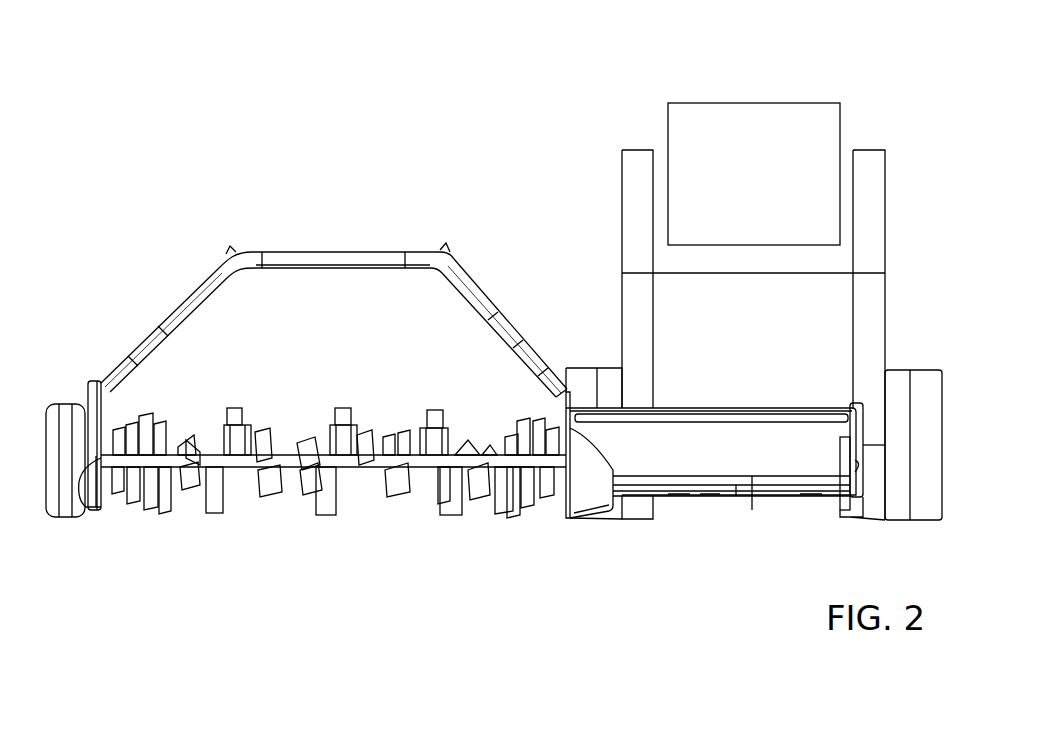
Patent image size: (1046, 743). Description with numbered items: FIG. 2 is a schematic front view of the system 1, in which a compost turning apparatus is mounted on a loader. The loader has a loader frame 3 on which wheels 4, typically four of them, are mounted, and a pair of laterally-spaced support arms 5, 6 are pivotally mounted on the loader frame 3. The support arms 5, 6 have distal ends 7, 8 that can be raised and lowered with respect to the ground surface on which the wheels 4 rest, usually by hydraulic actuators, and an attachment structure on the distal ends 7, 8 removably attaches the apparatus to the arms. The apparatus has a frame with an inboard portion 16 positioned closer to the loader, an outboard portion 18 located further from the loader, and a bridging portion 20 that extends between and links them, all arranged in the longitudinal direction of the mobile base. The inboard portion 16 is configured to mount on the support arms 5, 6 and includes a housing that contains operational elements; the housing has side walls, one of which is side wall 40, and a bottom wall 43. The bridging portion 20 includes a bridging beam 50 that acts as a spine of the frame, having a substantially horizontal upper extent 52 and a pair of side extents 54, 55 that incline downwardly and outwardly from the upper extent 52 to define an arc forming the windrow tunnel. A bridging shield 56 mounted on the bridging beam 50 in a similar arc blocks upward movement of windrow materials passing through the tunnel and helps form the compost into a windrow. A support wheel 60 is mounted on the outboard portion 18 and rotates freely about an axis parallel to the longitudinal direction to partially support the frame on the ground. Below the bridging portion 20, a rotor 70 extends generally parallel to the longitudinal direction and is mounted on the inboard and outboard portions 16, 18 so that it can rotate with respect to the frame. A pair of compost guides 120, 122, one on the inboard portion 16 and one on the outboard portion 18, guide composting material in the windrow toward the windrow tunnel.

The system 1 is at (468, 92).
The bridging portion 20 is at (334, 299).
The upper extent 52 is at (300, 268).
The bridging beam 50 is at (376, 268).
The bridging shield 56 is at (450, 260).
The side extent 55 is at (152, 366).
The side extent 54 is at (536, 362).
The outboard portion 18 is at (86, 440).
The support wheel 60 is at (58, 492).
The compost guide 122 is at (98, 502).
The rotor 70 is at (356, 508).
The compost guide 120 is at (588, 500).
The inboard portion 16 is at (711, 504).
The side wall 40 is at (694, 456).
The bottom wall 43 is at (734, 500).
The distal end 8 is at (638, 390).
The support arm 6 is at (642, 192).
The support arm 5 is at (868, 192).
The loader frame 3 is at (838, 262).
The wheel 4 is at (893, 378).
The distal end 7 is at (870, 430).